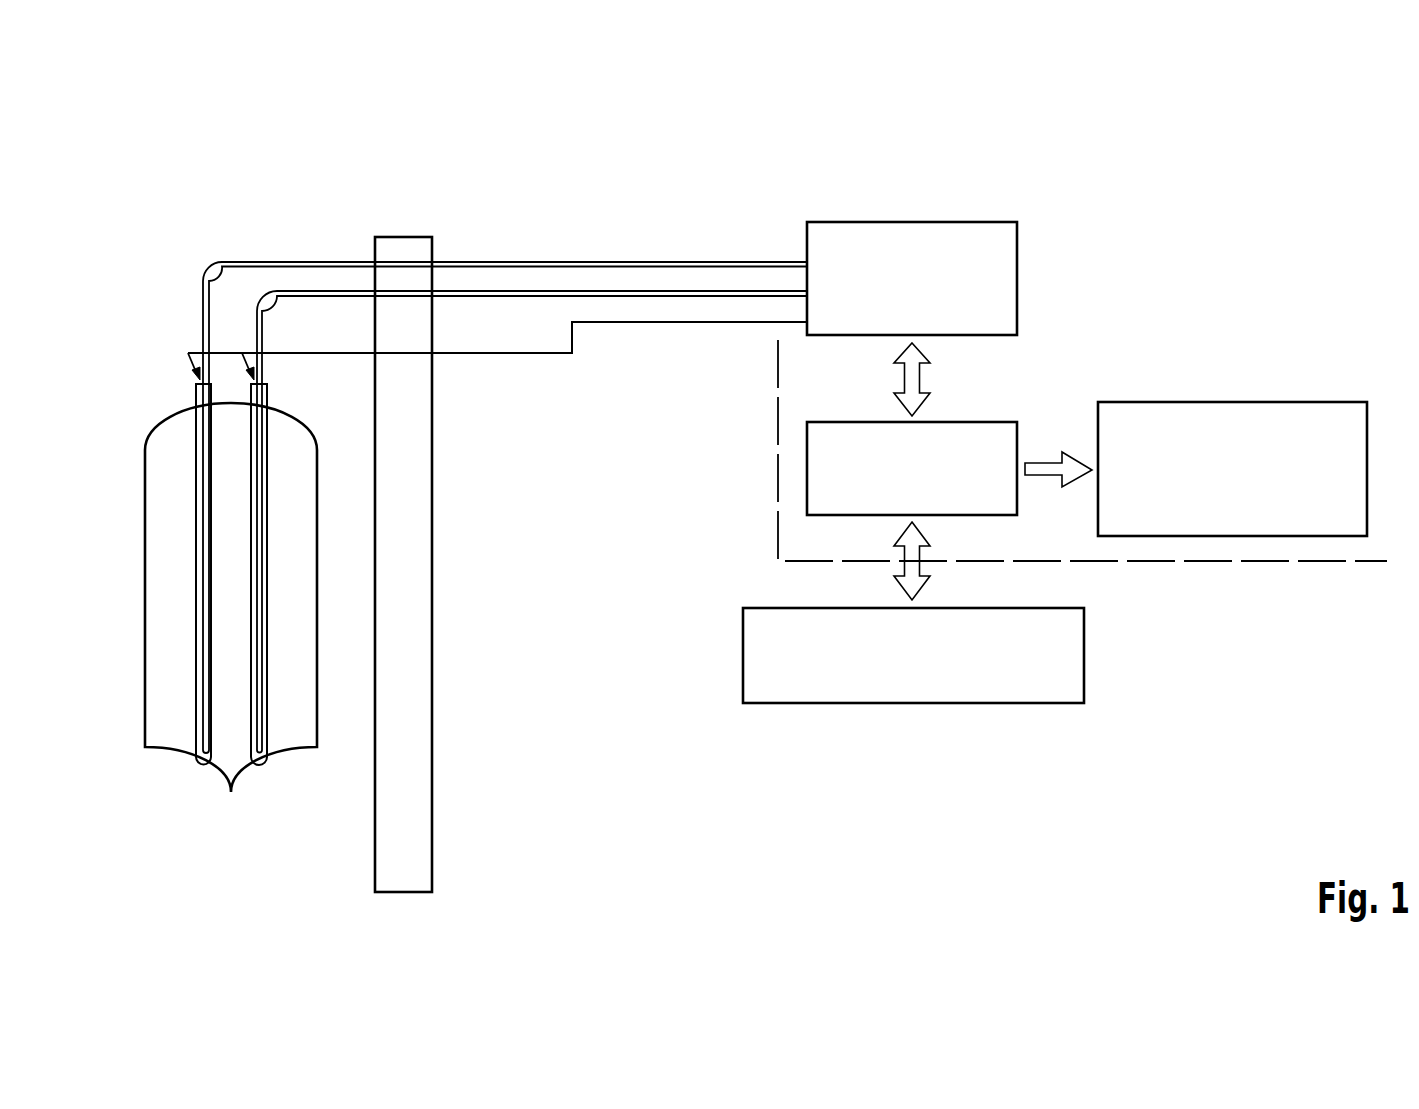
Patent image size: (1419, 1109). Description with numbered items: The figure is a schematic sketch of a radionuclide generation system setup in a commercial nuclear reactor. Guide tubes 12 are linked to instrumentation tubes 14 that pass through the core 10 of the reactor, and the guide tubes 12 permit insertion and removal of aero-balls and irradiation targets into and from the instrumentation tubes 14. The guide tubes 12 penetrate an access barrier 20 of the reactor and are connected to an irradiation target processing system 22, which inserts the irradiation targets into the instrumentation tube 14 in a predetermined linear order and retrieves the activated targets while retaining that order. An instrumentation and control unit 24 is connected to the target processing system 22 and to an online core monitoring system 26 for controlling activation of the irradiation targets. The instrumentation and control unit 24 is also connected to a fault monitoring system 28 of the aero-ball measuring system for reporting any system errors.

The core 10 is at (177, 690).
The guide tube 12 is at (298, 291).
The instrumentation tube 14 is at (197, 588).
The access barrier 20 is at (412, 817).
The irradiation target processing system 22 is at (912, 278).
The instrumentation and control unit 24 is at (912, 468).
The online core monitoring system 26 is at (913, 655).
The fault monitoring system 28 is at (1232, 469).